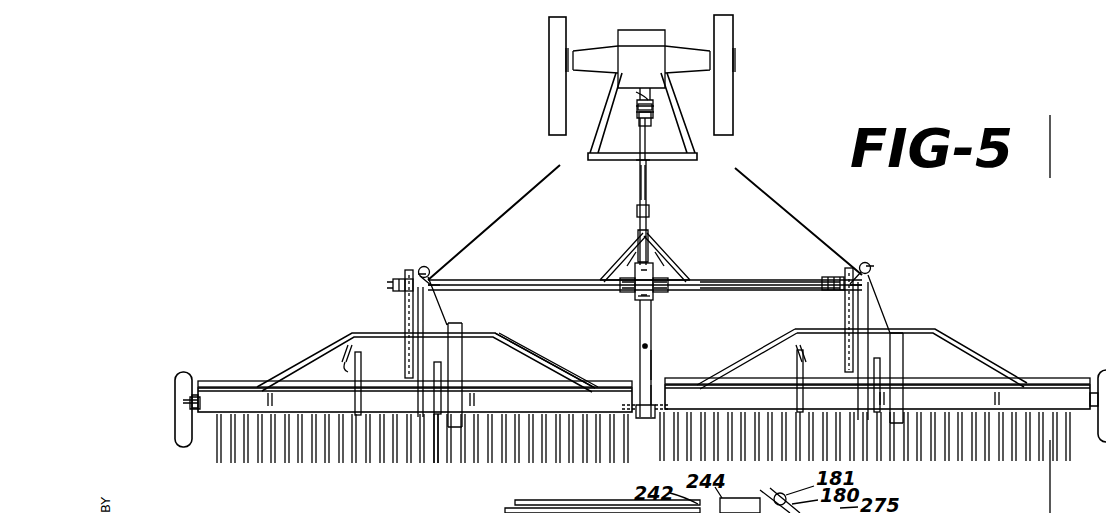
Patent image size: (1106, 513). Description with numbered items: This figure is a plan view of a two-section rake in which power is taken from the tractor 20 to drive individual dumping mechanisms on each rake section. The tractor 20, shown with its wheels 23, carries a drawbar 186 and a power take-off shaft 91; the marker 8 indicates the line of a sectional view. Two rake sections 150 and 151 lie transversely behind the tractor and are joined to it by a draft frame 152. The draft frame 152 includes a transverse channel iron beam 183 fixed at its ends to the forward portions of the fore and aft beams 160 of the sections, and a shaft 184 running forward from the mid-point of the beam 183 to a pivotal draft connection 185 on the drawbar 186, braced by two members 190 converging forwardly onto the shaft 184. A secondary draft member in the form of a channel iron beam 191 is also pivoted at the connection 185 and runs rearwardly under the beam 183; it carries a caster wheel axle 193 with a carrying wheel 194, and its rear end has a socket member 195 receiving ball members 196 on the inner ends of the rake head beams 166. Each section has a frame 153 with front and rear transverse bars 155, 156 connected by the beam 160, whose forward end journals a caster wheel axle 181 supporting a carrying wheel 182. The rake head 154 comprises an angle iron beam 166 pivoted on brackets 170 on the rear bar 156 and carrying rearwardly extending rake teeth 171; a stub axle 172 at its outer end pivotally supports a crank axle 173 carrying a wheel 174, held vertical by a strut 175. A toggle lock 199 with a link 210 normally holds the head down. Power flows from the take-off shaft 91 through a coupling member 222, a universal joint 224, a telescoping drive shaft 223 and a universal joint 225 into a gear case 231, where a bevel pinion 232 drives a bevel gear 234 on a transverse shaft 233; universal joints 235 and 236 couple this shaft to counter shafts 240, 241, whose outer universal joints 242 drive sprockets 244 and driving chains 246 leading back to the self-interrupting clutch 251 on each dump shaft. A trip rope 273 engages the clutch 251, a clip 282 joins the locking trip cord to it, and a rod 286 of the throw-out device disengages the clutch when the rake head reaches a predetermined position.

The section line 8 is at (1050, 115).
The tractor 20 is at (639, 86).
The tractor wheels 23 is at (549, 41).
The tractor power take-off shaft 91 is at (645, 93).
The coupling member 222 is at (648, 112).
The universal joint 224 is at (640, 118).
The tractor drawbar 186 is at (588, 147).
The shaft 184 is at (647, 190).
The telescoping drive shaft 223 is at (647, 170).
The pivotal draft connection 185 is at (636, 168).
The universal joint 225 is at (638, 226).
The bracing members 190 is at (662, 256).
The bevel pinion 232 is at (628, 266).
The universal joint 236 is at (672, 273).
The counter shaft 240 is at (532, 285).
The counter shaft 241 is at (755, 290).
The transverse channel iron beam 183 is at (748, 280).
The draft frame 152 is at (712, 238).
The short transverse shaft 233 is at (640, 300).
The universal joint 235 is at (632, 296).
The bevel gear 234 is at (655, 300).
The gear case 231 is at (633, 291).
The secondary draft member 191 is at (652, 320).
The caster wheel axle 193 is at (644, 344).
The carrying wheel 194 is at (652, 366).
The socket member 195 is at (656, 398).
The ball members 196 is at (634, 406).
The caster wheel axle 181 is at (426, 266).
The universal joints 242 is at (432, 275).
The carrying wheel 182 is at (421, 274).
The sprocket 244 is at (393, 284).
The driving chain 246 is at (405, 304).
The clip 282 is at (436, 286).
The fore and aft extending beam 160 is at (446, 302).
The trip rope 273 is at (522, 207).
The rake section 150 is at (620, 374).
The rake section 151 is at (987, 302).
The frame 153 is at (305, 357).
The front transverse bar 155 is at (545, 358).
The rear transverse bar 156 is at (560, 380).
The toggle lock 199 is at (472, 374).
The brackets 170 is at (644, 398).
The transverse angle iron beam 166 is at (611, 397).
The link 210 is at (709, 397).
The self-interrupting clutch 251 is at (617, 382).
The rod 286 is at (355, 373).
The tooth carrying rake head 154 is at (213, 452).
The rake teeth 171 is at (456, 450).
The carrying wheel 174 is at (178, 392).
The strut 175 is at (205, 395).
The stub axle 172 is at (195, 401).
The crank axle 173 is at (196, 410).